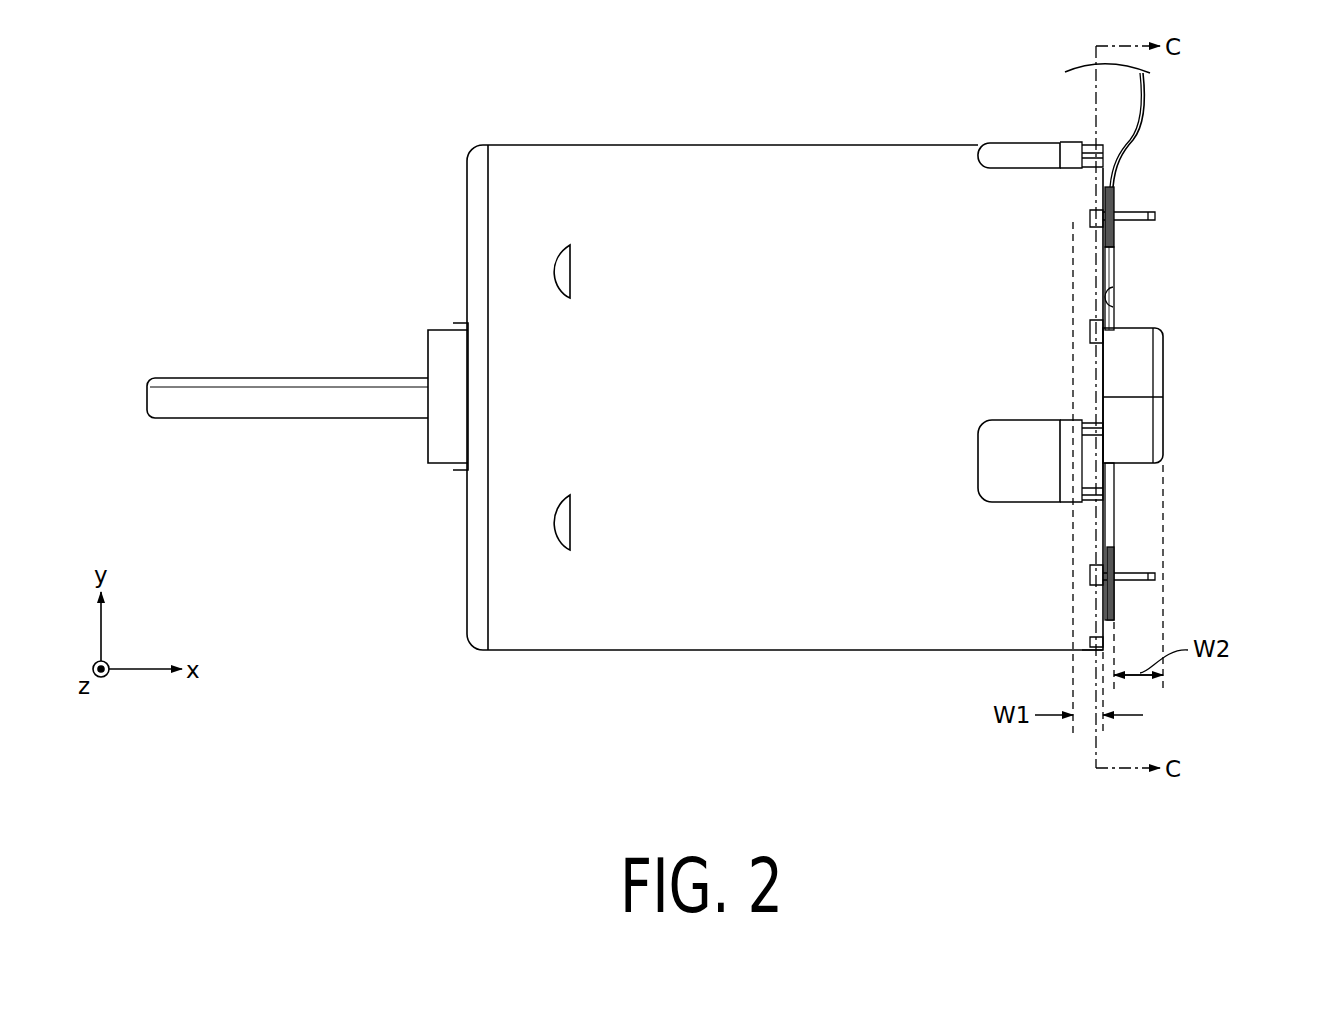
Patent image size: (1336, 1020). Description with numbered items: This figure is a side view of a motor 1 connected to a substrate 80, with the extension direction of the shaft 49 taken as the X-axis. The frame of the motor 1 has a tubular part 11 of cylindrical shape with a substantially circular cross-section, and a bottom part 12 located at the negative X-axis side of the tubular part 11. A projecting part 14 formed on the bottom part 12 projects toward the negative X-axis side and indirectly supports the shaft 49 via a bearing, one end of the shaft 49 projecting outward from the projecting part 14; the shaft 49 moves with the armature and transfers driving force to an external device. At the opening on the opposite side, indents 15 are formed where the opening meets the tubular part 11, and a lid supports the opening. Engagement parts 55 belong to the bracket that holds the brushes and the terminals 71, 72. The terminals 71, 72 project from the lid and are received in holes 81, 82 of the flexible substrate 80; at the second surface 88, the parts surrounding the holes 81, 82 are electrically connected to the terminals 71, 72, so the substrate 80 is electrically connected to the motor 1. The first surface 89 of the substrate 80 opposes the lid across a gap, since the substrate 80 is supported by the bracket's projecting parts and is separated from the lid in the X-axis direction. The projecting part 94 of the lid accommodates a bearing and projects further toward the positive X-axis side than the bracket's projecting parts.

The motor 1 is at (640, 80).
The tubular part 11 is at (762, 170).
The bottom part 12 is at (468, 206).
The projecting part 14 is at (440, 330).
The indents 15 is at (975, 440).
The shaft 49 is at (250, 393).
The engagement parts 55 is at (1000, 153).
The terminal 71 is at (1138, 213).
The terminal 72 is at (1138, 582).
The substrate 80 is at (1273, 217).
The hole 81 is at (1113, 230).
The hole 82 is at (1117, 563).
The second surface 88 is at (1113, 257).
The first surface 89 is at (1113, 293).
The projecting part 94 is at (1160, 420).